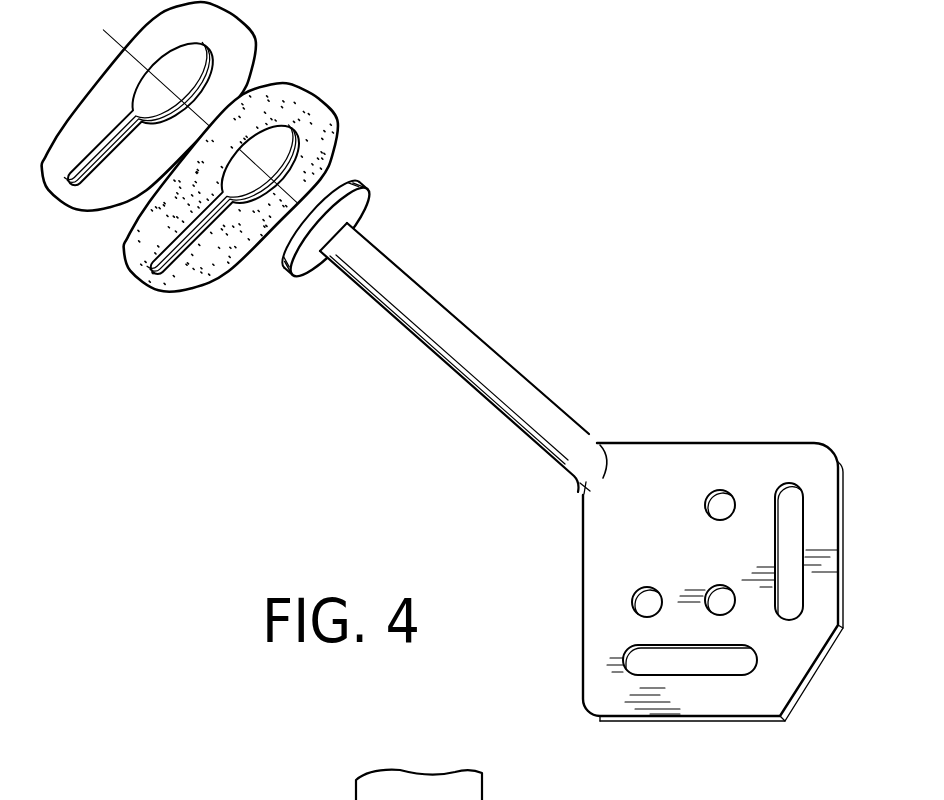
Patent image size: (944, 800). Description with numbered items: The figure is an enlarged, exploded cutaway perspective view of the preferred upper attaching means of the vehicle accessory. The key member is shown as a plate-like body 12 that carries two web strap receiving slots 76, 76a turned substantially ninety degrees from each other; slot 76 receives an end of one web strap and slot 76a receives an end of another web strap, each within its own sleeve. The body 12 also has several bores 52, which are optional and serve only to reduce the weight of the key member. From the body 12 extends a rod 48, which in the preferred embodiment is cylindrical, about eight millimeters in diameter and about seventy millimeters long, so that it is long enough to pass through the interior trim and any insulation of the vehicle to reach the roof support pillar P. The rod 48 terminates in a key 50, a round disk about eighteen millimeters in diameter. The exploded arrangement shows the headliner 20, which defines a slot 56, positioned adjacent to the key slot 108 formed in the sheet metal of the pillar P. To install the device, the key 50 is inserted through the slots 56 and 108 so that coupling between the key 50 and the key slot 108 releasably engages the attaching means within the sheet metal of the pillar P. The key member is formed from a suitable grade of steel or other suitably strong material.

The roof support pillar P is at (228, 33).
The key slot 108 is at (105, 117).
The headliner 20 is at (325, 122).
The slot 56 is at (188, 236).
The key 50 is at (362, 193).
The rod 48 is at (470, 336).
The mounting plate 12 is at (686, 443).
The web strap receiving slot 76a is at (785, 484).
The web strap receiving slot 76 is at (718, 673).
The bores 52 is at (632, 594).